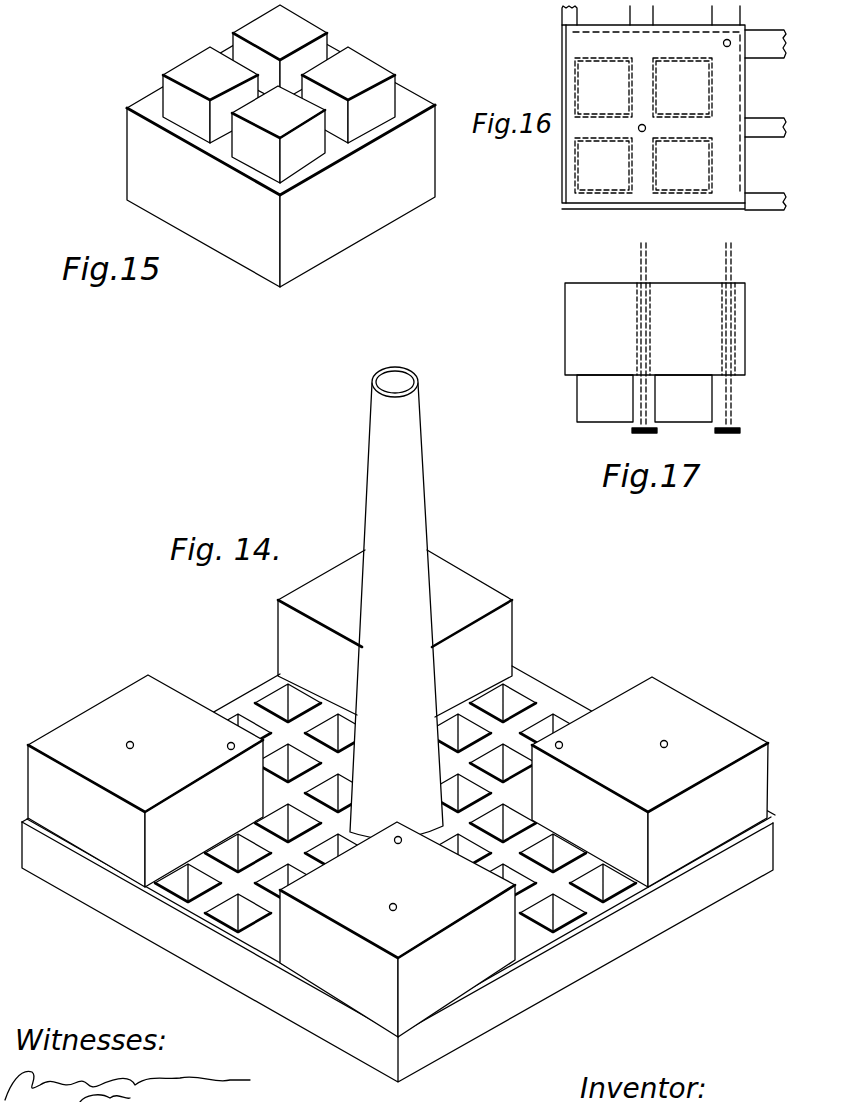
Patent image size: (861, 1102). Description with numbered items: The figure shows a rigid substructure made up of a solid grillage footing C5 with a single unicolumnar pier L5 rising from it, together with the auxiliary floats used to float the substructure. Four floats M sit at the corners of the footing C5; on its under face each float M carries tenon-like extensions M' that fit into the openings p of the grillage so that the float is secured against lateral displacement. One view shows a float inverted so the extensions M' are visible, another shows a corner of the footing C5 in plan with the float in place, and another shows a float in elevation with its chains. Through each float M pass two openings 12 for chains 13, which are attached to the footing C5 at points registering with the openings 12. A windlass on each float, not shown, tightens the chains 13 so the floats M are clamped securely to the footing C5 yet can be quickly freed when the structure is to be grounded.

In FIG. 15, the float M is at (281, 152).
In FIG. 16, the float M is at (653, 117).
In FIG. 17, the float M is at (655, 329).
In FIG. 14, the float M is at (398, 793).
In FIG. 15, the tenon-like extensions M' is at (279, 94).
In FIG. 17, the tenon-like extensions M' is at (644, 398).
In FIG. 16, the openings 12 is at (723, 43).
In FIG. 17, the openings 12 is at (636, 328).
In FIG. 14, the openings 12 is at (127, 747).
In FIG. 17, the chains 13 is at (640, 262).
In FIG. 14, the perforation in base plate p is at (395, 808).
In FIG. 14, the unicolumnar pier L5 is at (421, 603).
In FIG. 16, the solid grillage footing C5 is at (772, 213).
In FIG. 14, the solid grillage footing C5 is at (398, 874).